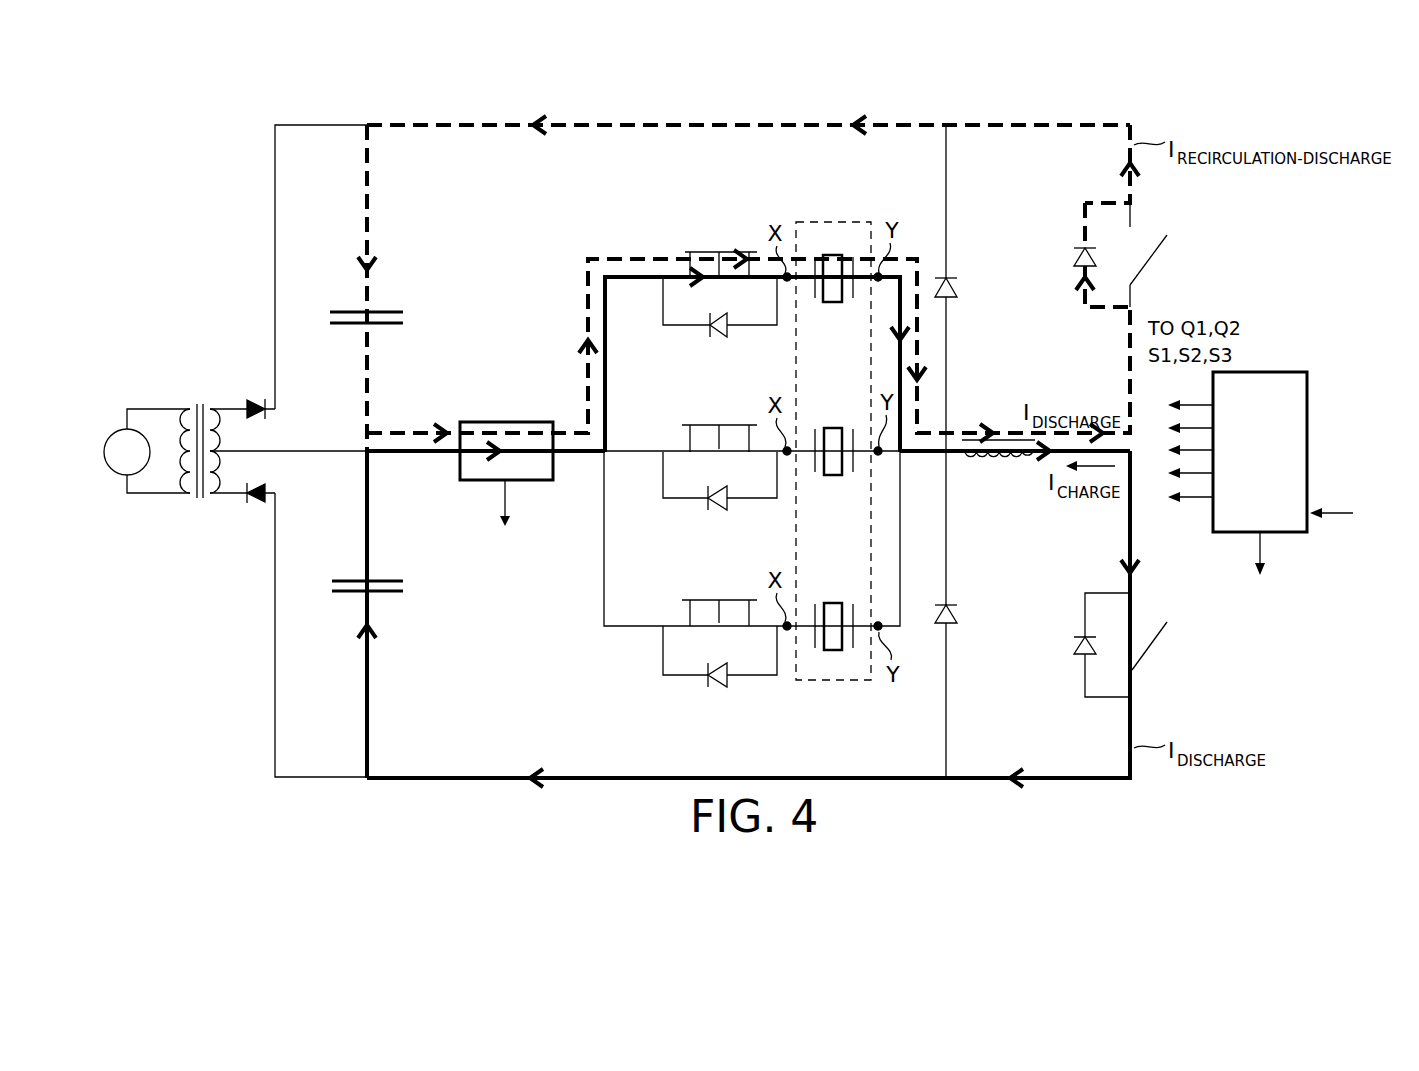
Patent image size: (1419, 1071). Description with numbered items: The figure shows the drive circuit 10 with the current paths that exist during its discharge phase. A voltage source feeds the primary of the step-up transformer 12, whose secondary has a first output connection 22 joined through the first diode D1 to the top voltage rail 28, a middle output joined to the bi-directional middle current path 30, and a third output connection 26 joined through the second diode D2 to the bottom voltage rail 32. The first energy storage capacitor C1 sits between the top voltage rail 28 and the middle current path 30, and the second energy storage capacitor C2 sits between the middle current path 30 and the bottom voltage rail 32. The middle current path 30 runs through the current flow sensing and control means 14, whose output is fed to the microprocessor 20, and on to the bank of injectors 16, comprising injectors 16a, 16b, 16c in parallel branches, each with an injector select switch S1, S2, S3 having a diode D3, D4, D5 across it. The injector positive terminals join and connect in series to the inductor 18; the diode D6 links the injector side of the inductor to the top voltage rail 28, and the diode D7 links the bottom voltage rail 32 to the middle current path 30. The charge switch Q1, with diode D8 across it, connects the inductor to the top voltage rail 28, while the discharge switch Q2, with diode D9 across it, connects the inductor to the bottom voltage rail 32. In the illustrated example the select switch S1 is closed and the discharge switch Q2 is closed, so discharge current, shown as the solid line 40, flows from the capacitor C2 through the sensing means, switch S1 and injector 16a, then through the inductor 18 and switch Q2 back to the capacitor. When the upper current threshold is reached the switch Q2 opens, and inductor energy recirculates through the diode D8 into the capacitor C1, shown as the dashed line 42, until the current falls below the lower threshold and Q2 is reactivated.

The drive circuit 10 is at (1100, 110).
The step-up transformer 12 is at (198, 405).
The current flow sensing and control means 14 is at (505, 421).
The bank of injectors 16 is at (835, 683).
The first injector 16a is at (838, 254).
The second injector 16b is at (833, 427).
The third injector 16c is at (833, 602).
The inductor 18 is at (1000, 463).
The microprocessor 20 is at (1271, 492).
The first output connection 22 is at (235, 407).
The third output connection 26 is at (233, 495).
The top voltage rail 28 is at (410, 123).
The middle current path 30 is at (412, 447).
The bottom voltage rail 32 is at (410, 775).
The discharge current path 40 is at (913, 783).
The recirculation discharge current path 42 is at (772, 123).
The first energy storage capacitor C1 is at (346, 310).
The second energy storage capacitor C2 is at (346, 580).
The first diode D1 is at (249, 398).
The second diode D2 is at (256, 505).
The diode D3 is at (720, 340).
The diode D4 is at (720, 514).
The diode D5 is at (720, 689).
The diode D6 is at (960, 288).
The diode D7 is at (960, 615).
The diode D8 is at (1073, 258).
The diode D9 is at (1073, 645).
The injector select switch S1 is at (697, 250).
The injector select switch S2 is at (697, 423).
The injector select switch S3 is at (697, 598).
The charge switch Q1 is at (1167, 250).
The discharge switch Q2 is at (1167, 638).